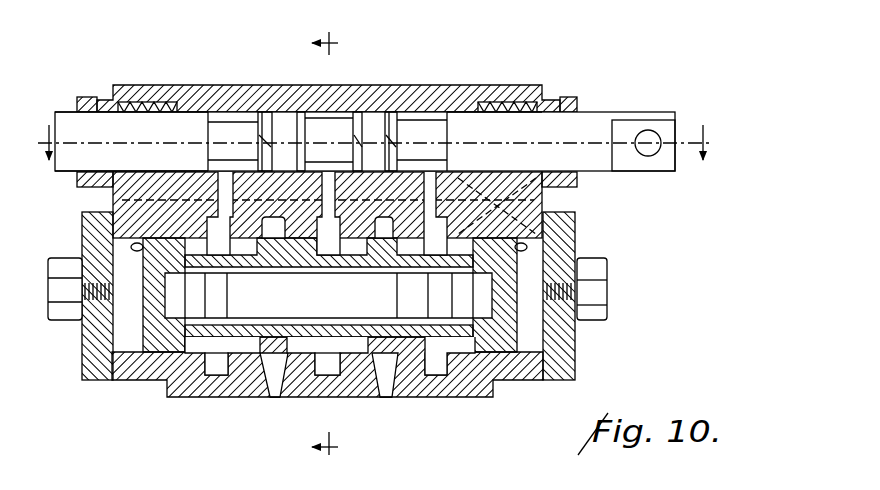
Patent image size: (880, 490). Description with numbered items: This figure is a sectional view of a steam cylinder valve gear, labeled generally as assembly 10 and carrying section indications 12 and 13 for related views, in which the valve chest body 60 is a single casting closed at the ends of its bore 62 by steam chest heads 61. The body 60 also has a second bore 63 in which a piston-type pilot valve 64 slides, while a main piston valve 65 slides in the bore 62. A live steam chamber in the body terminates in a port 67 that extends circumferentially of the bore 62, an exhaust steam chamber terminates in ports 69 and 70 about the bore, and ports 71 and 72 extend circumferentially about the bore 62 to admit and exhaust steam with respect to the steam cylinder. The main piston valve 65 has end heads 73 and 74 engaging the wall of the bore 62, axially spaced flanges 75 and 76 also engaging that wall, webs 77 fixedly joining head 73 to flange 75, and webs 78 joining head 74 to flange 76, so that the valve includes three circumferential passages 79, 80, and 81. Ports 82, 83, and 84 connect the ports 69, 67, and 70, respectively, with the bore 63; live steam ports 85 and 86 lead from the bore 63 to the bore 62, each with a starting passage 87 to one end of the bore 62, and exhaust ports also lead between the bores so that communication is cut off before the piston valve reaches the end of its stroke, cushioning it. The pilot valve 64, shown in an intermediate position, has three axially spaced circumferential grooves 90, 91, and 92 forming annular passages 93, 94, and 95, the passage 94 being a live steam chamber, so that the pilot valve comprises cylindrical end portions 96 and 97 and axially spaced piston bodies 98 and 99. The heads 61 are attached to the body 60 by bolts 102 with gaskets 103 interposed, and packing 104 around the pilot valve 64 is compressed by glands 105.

The valve assembly 10 is at (131, 116).
The section line 12 is at (377, 142).
The section line 13 is at (327, 243).
The valve chest body 60 is at (532, 95).
The steam chest heads 61 is at (106, 380).
The bore 62 is at (142, 330).
The second bore 63 is at (211, 118).
The pilot valve 64 is at (589, 122).
The main piston valve 65 is at (143, 320).
The port 67 is at (333, 370).
The port 69 is at (217, 370).
The port 70 is at (450, 368).
The port 71 is at (268, 357).
The port 72 is at (383, 390).
The end head 73 is at (150, 323).
The end head 74 is at (503, 352).
The flange 75 is at (278, 357).
The flange 76 is at (390, 357).
The webs 77 is at (245, 268).
The webs 78 is at (415, 267).
The circumferentially extending passage 79 is at (197, 352).
The circumferentially extending passage 80 is at (303, 350).
The circumferentially extending passage 81 is at (437, 370).
The port 82 is at (225, 182).
The port 83 is at (326, 180).
The port 84 is at (424, 180).
The live steam port 85 is at (285, 178).
The live steam port 86 is at (367, 176).
The starting passage 87 is at (131, 251).
The circumferential groove 90 is at (266, 116).
The circumferential groove 91 is at (334, 118).
The circumferential groove 92 is at (422, 120).
The annular passage 93 is at (245, 121).
The annular passage 94 is at (311, 117).
The annular passage 95 is at (405, 116).
The cylindrical end portion 96 is at (181, 124).
The cylindrical end portion 97 is at (458, 118).
The piston body 98 is at (294, 122).
The piston body 99 is at (369, 116).
The bolts 102 is at (56, 320).
The gaskets 103 is at (82, 228).
The packing 104 is at (142, 103).
The glands 105 is at (88, 97).